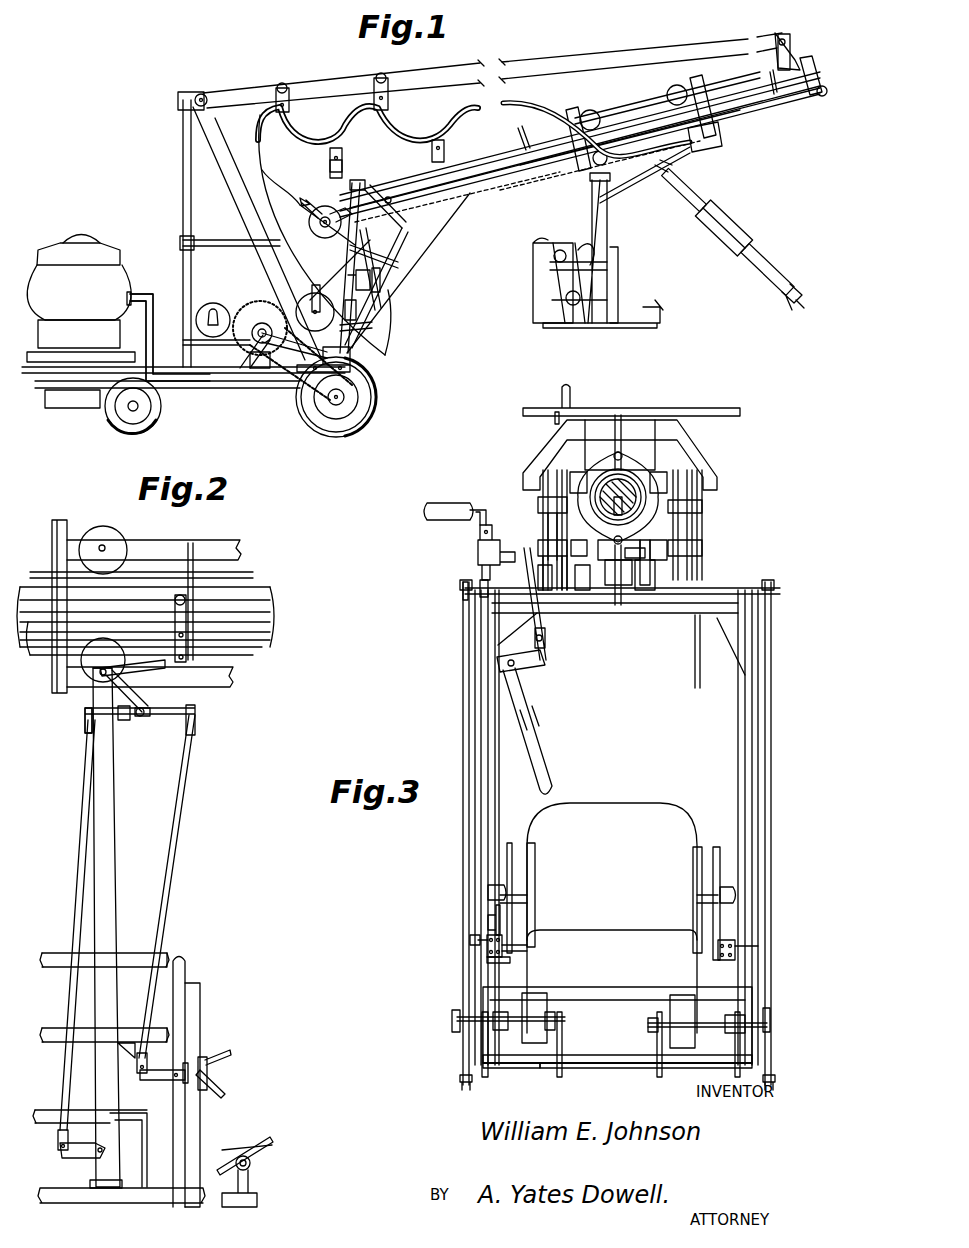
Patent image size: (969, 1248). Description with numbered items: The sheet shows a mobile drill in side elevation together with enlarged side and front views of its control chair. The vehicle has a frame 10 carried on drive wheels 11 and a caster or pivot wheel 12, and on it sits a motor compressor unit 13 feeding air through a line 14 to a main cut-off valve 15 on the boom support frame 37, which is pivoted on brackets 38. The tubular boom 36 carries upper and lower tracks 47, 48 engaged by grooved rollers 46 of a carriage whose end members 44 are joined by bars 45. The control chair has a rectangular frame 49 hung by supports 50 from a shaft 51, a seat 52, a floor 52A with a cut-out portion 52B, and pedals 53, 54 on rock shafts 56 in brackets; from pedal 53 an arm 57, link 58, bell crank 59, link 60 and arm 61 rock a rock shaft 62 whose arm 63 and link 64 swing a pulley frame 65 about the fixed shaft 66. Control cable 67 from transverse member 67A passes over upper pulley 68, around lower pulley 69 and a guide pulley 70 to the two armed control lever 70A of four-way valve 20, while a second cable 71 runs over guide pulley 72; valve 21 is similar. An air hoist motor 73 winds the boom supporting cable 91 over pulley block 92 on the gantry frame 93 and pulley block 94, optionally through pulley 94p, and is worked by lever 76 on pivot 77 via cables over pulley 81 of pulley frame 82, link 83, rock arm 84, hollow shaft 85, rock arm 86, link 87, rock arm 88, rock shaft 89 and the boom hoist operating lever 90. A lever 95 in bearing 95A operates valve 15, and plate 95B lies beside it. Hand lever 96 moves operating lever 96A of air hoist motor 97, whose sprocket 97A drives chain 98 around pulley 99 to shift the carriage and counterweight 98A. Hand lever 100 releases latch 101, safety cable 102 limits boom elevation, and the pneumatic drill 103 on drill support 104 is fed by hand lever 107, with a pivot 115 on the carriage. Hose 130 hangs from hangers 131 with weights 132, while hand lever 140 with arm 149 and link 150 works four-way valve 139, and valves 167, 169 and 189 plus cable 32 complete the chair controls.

In FIG. 1, the frame 10 is at (190, 386).
In FIG. 1, the drive wheels 11 is at (372, 390).
In FIG. 1, the caster or pivot wheel 12 is at (110, 420).
In FIG. 1, the motor compressor unit 13 is at (55, 258).
In FIG. 1, the air line 14 is at (152, 296).
In FIG. 1, the main cut-off valve 15 is at (378, 313).
In FIG. 1, the four-way valve 20 is at (383, 292).
In FIG. 1, the four-way valve 21 is at (398, 264).
In FIG. 1, the cable 32 is at (345, 250).
In FIG. 1, the tubular boom 36 is at (520, 184).
In FIG. 3, the tubular boom 36 is at (628, 472).
In FIG. 1, the boom support frame 37 is at (376, 323).
In FIG. 1, the brackets 38 is at (356, 355).
In FIG. 1, the end members 44 is at (690, 82).
In FIG. 2, the end members 44 is at (66, 520).
In FIG. 1, the bars 45 is at (630, 112).
In FIG. 2, the bars 45 is at (218, 540).
In FIG. 3, the bars 45 is at (652, 536).
In FIG. 1, the grooved rollers 46 is at (592, 112).
In FIG. 2, the grooved rollers 46 is at (118, 525).
In FIG. 3, the grooved rollers 46 is at (618, 412).
In FIG. 1, the upper track 47 is at (732, 94).
In FIG. 2, the upper track 47 is at (45, 570).
In FIG. 3, the upper track 47 is at (614, 458).
In FIG. 1, the lower track 48 is at (730, 118).
In FIG. 2, the lower track 48 is at (42, 660).
In FIG. 3, the lower track 48 is at (630, 528).
In FIG. 1, the rectangular frame 49 is at (606, 223).
In FIG. 2, the rectangular frame 49 is at (129, 833).
In FIG. 3, the rectangular frame 49 is at (662, 614).
In FIG. 2, the supports 50 is at (92, 702).
In FIG. 3, the supports 50 is at (645, 586).
In FIG. 3, the shaft 51 is at (628, 574).
In FIG. 3, the seat 52 is at (624, 972).
In FIG. 3, the floor 52A is at (497, 1066).
In FIG. 3, the cut-out portion 52B is at (597, 1066).
In FIG. 2, the pedal 53 is at (278, 1142).
In FIG. 3, the pedal 53 is at (560, 1028).
In FIG. 3, the pedal 54 is at (675, 1040).
In FIG. 2, the rock shaft 56 is at (258, 1148).
In FIG. 3, the rock shaft 56 is at (455, 1022).
In FIG. 2, the arm 57 is at (252, 1172).
In FIG. 3, the arm 57 is at (455, 1040).
In FIG. 2, the link 58 is at (172, 1192).
In FIG. 2, the bell crank 59 is at (72, 1160).
In FIG. 2, the link 60 is at (62, 1076).
In FIG. 3, the link 60 is at (575, 530).
In FIG. 2, the arm 61 is at (125, 722).
In FIG. 3, the arm 61 is at (464, 584).
In FIG. 3, the rock shaft 62 is at (580, 586).
In FIG. 2, the arm 63 is at (135, 692).
In FIG. 3, the arm 63 is at (577, 588).
In FIG. 2, the link 64 is at (135, 682).
In FIG. 3, the link 64 is at (580, 575).
In FIG. 2, the pulley frame 65 is at (190, 624).
In FIG. 3, the pulley frame 65 is at (570, 515).
In FIG. 2, the shaft 66 is at (172, 600).
In FIG. 3, the shaft 66 is at (535, 460).
In FIG. 1, the control cable 67 is at (450, 166).
In FIG. 1, the transverse member 67A is at (806, 62).
In FIG. 3, the upper pulley 68 is at (568, 456).
In FIG. 3, the lower pulley 69 is at (550, 512).
In FIG. 1, the guide pulley 70 is at (410, 182).
In FIG. 1, the two armed control lever 70A is at (393, 277).
In FIG. 1, the second cable 71 is at (636, 84).
In FIG. 1, the guide pulley 72 is at (372, 174).
In FIG. 1, the air hoist motor 73 is at (298, 306).
In FIG. 1, the lever 76 is at (402, 214).
In FIG. 1, the pivot 77 is at (338, 165).
In FIG. 3, the pulley 81 is at (560, 466).
In FIG. 3, the pulley frame 82 is at (532, 498).
In FIG. 3, the link 83 is at (550, 530).
In FIG. 2, the rock arm 84 is at (143, 714).
In FIG. 3, the rock arm 84 is at (545, 548).
In FIG. 3, the hollow shaft 85 is at (552, 588).
In FIG. 2, the rock arm 86 is at (190, 712).
In FIG. 3, the rock arm 86 is at (480, 582).
In FIG. 2, the link 87 is at (172, 894).
In FIG. 3, the link 87 is at (468, 902).
In FIG. 2, the rock arm 88 is at (162, 1080).
In FIG. 3, the rock arm 88 is at (478, 938).
In FIG. 3, the rock shaft 89 is at (525, 956).
In FIG. 3, the boom hoist operating lever 90 is at (540, 868).
In FIG. 1, the boom supporting cable 91 is at (405, 84).
In FIG. 1, the pulley block 92 is at (193, 92).
In FIG. 1, the gantry frame 93 is at (172, 170).
In FIG. 1, the pulley block 94 is at (784, 34).
In FIG. 1, the pulley 94p is at (508, 104).
In FIG. 2, the lever 95 is at (188, 966).
In FIG. 3, the lever 95 is at (518, 845).
In FIG. 3, the bearing 95A is at (507, 962).
In FIG. 2, the plate 95B is at (198, 1040).
In FIG. 1, the hand lever 96 is at (274, 350).
In FIG. 3, the hand lever 96 is at (695, 880).
In FIG. 1, the operating lever 96A is at (262, 170).
In FIG. 1, the air hoist motor 97 is at (320, 214).
In FIG. 1, the sprocket 97A is at (318, 228).
In FIG. 1, the chain 98 is at (478, 196).
In FIG. 3, the roller supported counterweight 98A is at (656, 472).
In FIG. 1, the pulley 99 is at (822, 98).
In FIG. 3, the hand lever 100 is at (712, 845).
In FIG. 1, the latch 101 is at (350, 258).
In FIG. 1, the safety cable 102 is at (380, 333).
In FIG. 1, the pneumatic drill 103 is at (740, 190).
In FIG. 1, the drill support 104 is at (700, 215).
In FIG. 3, the hand lever 107 is at (692, 652).
In FIG. 1, the pivot 115 is at (712, 156).
In FIG. 1, the flexible hose 130 is at (265, 140).
In FIG. 1, the pulley supported hangers 131 is at (388, 96).
In FIG. 1, the weights 132 is at (432, 150).
In FIG. 3, the four-way valve 139 is at (495, 550).
In FIG. 3, the hand lever 140 is at (545, 770).
In FIG. 3, the arm 149 is at (540, 664).
In FIG. 3, the link 150 is at (547, 626).
In FIG. 2, the valve 167 is at (222, 1060).
In FIG. 2, the valve 169 is at (224, 1092).
In FIG. 2, the valve 189 is at (122, 1040).
In FIG. 3, the valve 189 is at (488, 921).